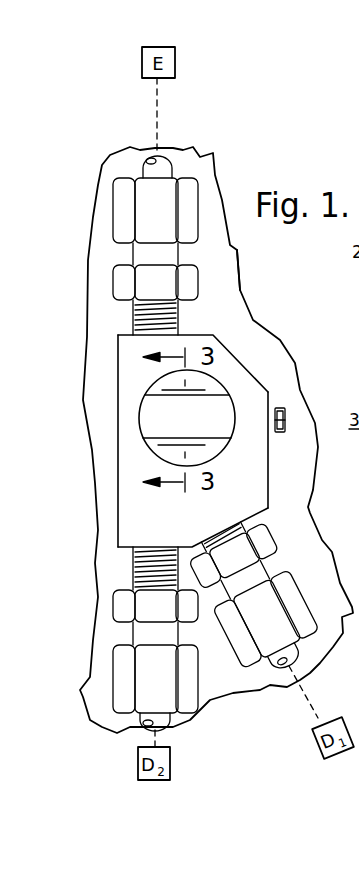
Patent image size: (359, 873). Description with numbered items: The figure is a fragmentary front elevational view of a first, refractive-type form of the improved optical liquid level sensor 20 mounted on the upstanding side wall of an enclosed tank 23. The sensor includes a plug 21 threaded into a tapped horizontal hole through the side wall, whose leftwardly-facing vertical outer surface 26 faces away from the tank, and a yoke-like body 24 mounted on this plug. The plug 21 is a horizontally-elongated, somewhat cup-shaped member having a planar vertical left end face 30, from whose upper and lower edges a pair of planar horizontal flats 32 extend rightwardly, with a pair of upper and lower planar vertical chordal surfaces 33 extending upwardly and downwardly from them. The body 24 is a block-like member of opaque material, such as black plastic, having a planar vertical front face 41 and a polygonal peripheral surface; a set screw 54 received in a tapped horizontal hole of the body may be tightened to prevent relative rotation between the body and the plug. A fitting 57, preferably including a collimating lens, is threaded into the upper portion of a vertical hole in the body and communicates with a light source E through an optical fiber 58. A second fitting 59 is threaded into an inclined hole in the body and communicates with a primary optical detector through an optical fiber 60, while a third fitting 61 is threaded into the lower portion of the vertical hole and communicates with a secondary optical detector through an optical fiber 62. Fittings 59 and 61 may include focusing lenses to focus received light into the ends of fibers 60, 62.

The liquid level sensor 20 is at (122, 325).
The plug 21 is at (262, 377).
The tank 23 is at (213, 153).
The body 24 is at (117, 442).
The outer surface 26 is at (226, 250).
The left end face 30 is at (225, 408).
The flats 32 is at (213, 380).
The chordal surfaces 33 is at (167, 385).
The front face 41 is at (258, 486).
The set screw 54 is at (286, 418).
The fitting 57 is at (197, 195).
The optical fiber 58 is at (140, 163).
The second fitting 59 is at (313, 600).
The optical fiber 60 is at (275, 665).
The third fitting 61 is at (118, 643).
The optical fiber 62 is at (130, 727).